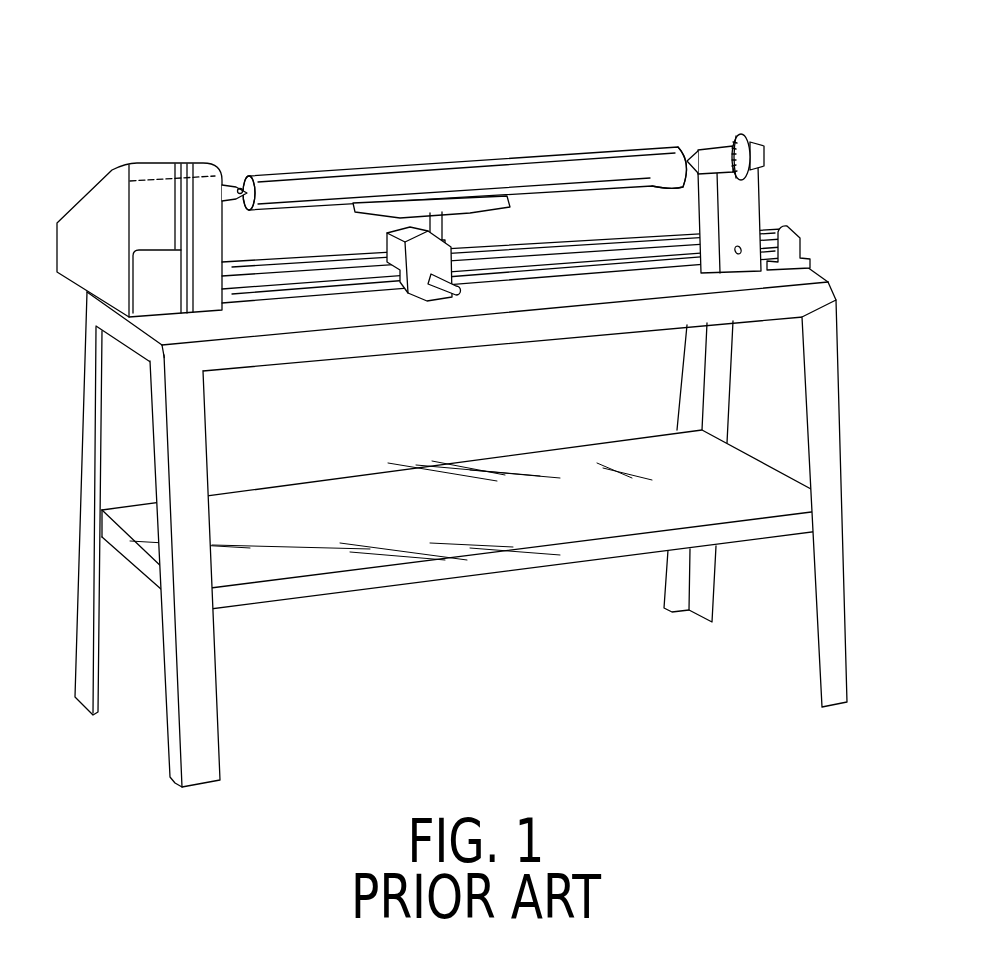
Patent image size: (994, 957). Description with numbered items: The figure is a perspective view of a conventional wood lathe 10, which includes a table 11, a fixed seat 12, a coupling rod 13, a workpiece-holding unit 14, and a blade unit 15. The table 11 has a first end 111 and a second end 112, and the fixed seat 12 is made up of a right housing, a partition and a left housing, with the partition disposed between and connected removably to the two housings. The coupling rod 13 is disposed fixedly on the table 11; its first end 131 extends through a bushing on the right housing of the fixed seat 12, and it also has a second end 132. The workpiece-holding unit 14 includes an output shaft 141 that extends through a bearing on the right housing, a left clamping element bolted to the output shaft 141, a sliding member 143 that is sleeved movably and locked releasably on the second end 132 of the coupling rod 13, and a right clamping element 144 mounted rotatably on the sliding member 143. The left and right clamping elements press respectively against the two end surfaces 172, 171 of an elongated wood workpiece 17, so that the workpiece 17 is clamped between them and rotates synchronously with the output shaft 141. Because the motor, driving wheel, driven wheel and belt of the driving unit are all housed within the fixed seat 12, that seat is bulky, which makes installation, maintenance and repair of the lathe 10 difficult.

The wood lathe 10 is at (467, 394).
The table 11 is at (467, 524).
The first end 111 is at (160, 327).
The second end 112 is at (740, 284).
The fixed seat 12 is at (143, 166).
The coupling rod 13 is at (588, 257).
The first end 131 is at (268, 294).
The second end 132 is at (768, 228).
The workpiece-holding unit 14 is at (757, 137).
The output shaft 141 is at (221, 180).
The sliding member 143 is at (737, 203).
The right clamping element 144 is at (692, 156).
The blade unit 15 is at (440, 304).
The wood workpiece 17 is at (452, 120).
The end surface 171 is at (255, 197).
The end surface 172 is at (245, 187).